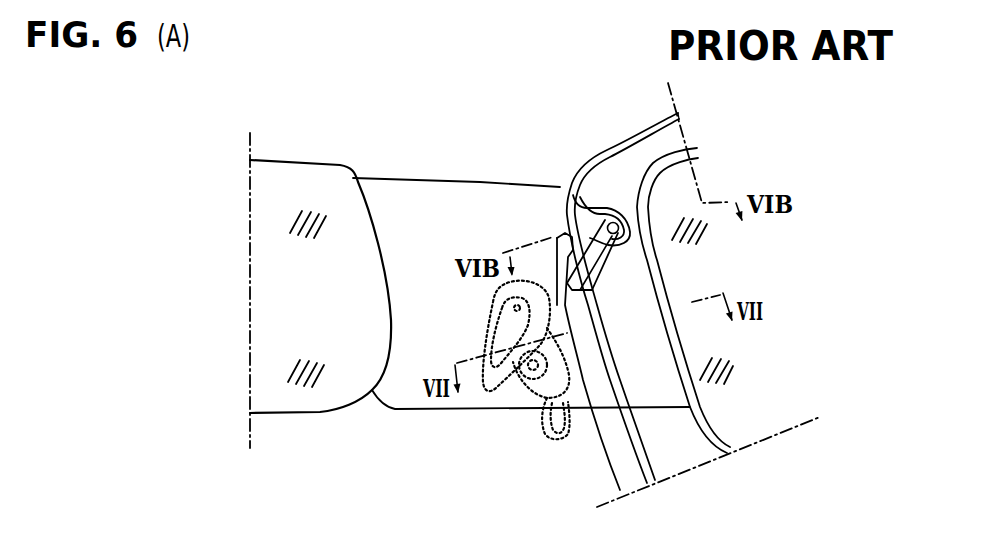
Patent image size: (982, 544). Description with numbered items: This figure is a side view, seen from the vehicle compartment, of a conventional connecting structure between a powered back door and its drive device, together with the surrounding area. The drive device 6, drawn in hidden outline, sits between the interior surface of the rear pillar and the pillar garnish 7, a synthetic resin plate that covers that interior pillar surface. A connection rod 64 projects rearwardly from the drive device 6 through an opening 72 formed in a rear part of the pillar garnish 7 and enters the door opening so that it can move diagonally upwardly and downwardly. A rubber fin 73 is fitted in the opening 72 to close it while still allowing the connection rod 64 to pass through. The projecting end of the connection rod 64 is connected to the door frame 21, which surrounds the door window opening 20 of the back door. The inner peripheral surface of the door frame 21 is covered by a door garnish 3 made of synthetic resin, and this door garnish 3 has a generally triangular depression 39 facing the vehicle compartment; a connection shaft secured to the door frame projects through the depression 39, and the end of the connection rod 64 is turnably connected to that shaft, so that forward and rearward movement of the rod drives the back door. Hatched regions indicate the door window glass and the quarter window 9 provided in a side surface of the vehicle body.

The quarter window 9 is at (290, 183).
The pillar garnish 7 is at (421, 240).
The opening 72 is at (552, 250).
The rubber fin 73 is at (560, 236).
The depression 39 is at (597, 222).
The door frame 21 is at (640, 151).
The connection rod 64 is at (612, 250).
The door window opening 20 is at (845, 367).
The drive device 6 is at (511, 403).
The door garnish 3 is at (650, 371).